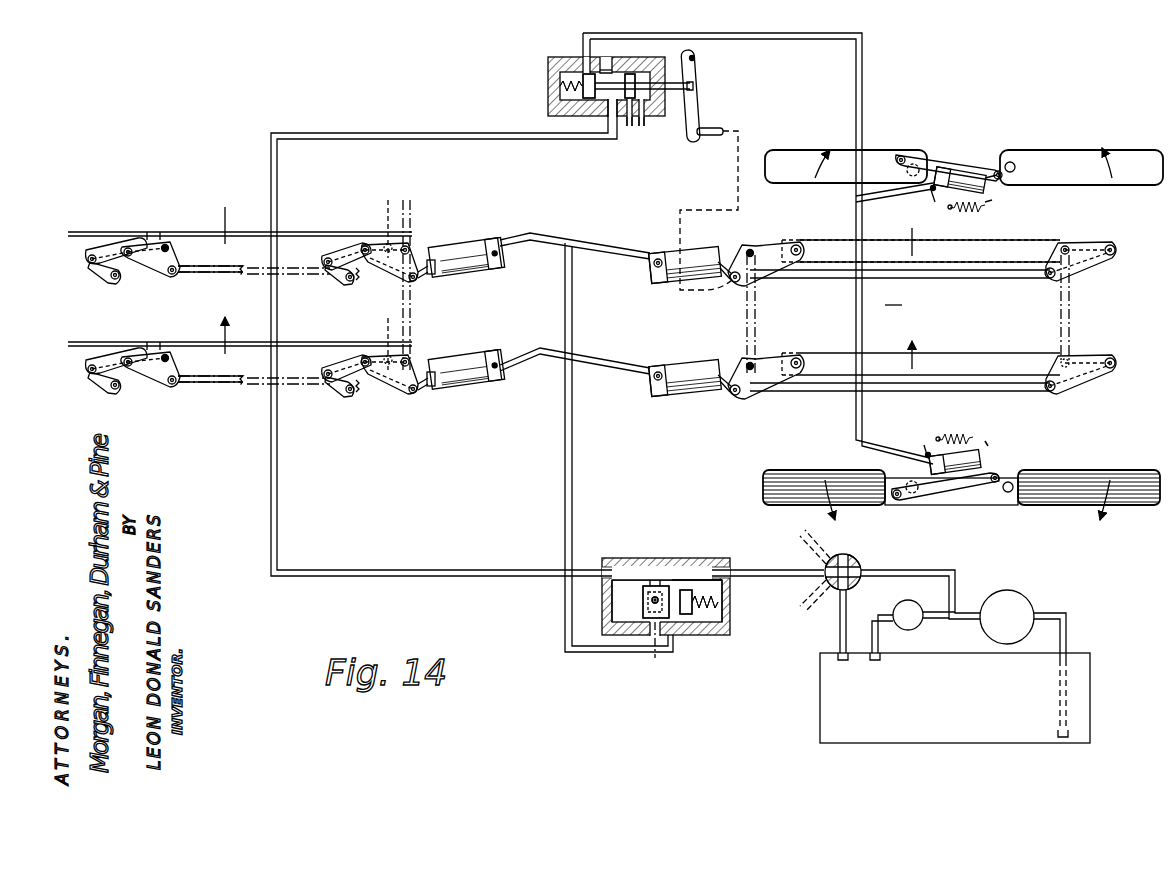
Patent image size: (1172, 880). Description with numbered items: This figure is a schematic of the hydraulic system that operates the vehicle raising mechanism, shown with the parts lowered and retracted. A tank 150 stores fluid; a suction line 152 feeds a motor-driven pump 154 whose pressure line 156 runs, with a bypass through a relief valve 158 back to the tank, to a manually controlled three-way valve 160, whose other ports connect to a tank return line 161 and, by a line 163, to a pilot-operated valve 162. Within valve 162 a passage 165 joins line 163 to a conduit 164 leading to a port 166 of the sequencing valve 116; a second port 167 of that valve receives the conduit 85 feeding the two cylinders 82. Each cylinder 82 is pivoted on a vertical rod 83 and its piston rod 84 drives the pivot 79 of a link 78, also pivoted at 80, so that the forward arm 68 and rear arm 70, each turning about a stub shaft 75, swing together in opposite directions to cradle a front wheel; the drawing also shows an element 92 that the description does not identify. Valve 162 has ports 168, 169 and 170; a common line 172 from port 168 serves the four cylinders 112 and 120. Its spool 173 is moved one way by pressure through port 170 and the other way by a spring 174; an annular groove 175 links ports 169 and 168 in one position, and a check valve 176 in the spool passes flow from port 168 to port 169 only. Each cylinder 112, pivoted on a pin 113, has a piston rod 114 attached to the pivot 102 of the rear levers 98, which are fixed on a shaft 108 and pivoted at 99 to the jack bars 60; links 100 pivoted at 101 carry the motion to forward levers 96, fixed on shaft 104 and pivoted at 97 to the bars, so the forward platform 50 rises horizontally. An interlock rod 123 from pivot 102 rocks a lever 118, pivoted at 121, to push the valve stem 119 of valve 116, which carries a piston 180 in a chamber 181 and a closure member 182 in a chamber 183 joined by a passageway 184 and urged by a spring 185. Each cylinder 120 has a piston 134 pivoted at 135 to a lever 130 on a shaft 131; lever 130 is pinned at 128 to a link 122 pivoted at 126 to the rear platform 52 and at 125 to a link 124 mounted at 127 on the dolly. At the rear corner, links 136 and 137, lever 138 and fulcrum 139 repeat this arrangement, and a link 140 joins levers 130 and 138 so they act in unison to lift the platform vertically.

The forward platform 50 is at (880, 322).
The rear platform 52 is at (291, 231).
The jack bars 60 is at (970, 245).
The forward arm 68 is at (1135, 158).
The rear arm 70 is at (790, 160).
The stub shaft 75 is at (914, 165).
The link 78 is at (940, 160).
The pivot 79 is at (1002, 178).
The pivot 80 is at (899, 156).
The hydraulic cylinder 82 is at (958, 172).
The vertical rod 83 is at (934, 196).
The piston rod 84 is at (988, 176).
The conduit 85 is at (790, 33).
The spring 92 is at (975, 207).
The lever 96 is at (1088, 245).
The pivot 97 is at (1112, 245).
The levers 98 is at (768, 243).
The pivot 99 is at (796, 245).
The link 100 is at (930, 282).
The pivot 101 is at (1046, 279).
The pivot 102 is at (734, 284).
The shaft 104 is at (1064, 245).
The shaft 108 is at (749, 249).
The hydraulic cylinder 112 is at (672, 270).
The pin 113 is at (654, 266).
The piston rod 114 is at (728, 266).
The valve 116 is at (545, 63).
The lever 118 is at (700, 95).
The valve stem 119 is at (685, 92).
The hydraulic cylinder 120 is at (470, 245).
The pivot 121 is at (696, 58).
The link 122 is at (348, 250).
The interlock rod 123 is at (714, 128).
The link 124 is at (340, 281).
The pivot 125 is at (325, 260).
The pivot 126 is at (395, 205).
The pivot 127 is at (349, 282).
The pin 128 is at (366, 246).
The lever 130 is at (395, 268).
The shaft 131 is at (410, 246).
The piston 134 is at (432, 258).
The pivot 135 is at (418, 280).
The link 136 is at (108, 246).
The link 137 is at (104, 280).
The lever 138 is at (152, 267).
The lever fulcrum 139 is at (168, 246).
The link 140 is at (214, 266).
The tank 150 is at (921, 701).
The suction line 152 is at (1067, 630).
The hydraulic pump 154 is at (1004, 592).
The pressure line 156 is at (949, 588).
The relief valve 158 is at (912, 630).
The three-way valve 160 is at (855, 565).
The line 161 is at (840, 630).
The pilot-operated valve 162 is at (612, 557).
The line 163 is at (775, 570).
The conduit 164 is at (328, 133).
The passage 165 is at (690, 578).
The port 166 is at (608, 110).
The port 167 is at (600, 68).
The port 168 is at (690, 635).
The port 169 is at (656, 580).
The port 170 is at (612, 590).
The common line 172 is at (565, 300).
The spool 173 is at (722, 627).
The spring 174 is at (722, 601).
The annular groove 175 is at (645, 618).
The check valve 176 is at (655, 650).
The piston 180 is at (630, 126).
The chamber 181 is at (642, 126).
The closure member 182 is at (582, 96).
The chamber 183 is at (580, 57).
The passageway 184 is at (628, 72).
The spring 185 is at (560, 84).